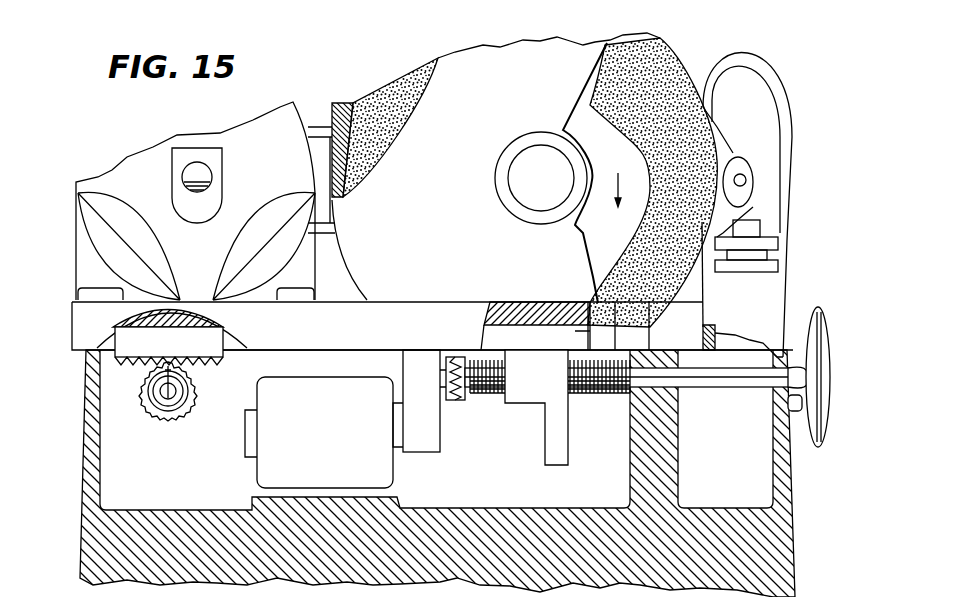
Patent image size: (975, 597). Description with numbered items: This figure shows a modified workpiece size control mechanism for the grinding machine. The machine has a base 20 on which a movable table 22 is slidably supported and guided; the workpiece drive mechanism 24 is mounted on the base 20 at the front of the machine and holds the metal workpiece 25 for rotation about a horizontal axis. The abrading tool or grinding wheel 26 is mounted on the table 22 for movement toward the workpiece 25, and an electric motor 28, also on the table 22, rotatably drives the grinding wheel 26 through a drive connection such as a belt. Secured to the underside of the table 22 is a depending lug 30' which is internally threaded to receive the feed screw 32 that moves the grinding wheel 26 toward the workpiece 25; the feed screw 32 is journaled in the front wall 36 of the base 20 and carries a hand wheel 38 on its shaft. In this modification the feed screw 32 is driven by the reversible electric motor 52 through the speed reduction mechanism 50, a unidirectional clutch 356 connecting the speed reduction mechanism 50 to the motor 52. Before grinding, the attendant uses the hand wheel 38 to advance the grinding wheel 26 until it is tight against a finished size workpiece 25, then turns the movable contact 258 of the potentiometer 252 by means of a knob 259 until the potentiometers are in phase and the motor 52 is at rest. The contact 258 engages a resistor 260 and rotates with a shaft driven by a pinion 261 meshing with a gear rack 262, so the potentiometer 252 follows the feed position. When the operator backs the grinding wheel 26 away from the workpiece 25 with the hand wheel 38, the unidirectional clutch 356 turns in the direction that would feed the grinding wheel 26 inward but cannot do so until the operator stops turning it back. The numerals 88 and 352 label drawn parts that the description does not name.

The base 20 is at (780, 566).
The movable table 22 is at (505, 312).
The workpiece drive mechanism 24 is at (790, 212).
The workpiece 25 is at (745, 196).
The grinding wheel 26 is at (672, 70).
The electric motor 28 is at (95, 236).
The depending lug 30' is at (565, 310).
The feed screw 32 is at (591, 394).
The front wall 36 is at (780, 428).
The hand wheel 38 is at (822, 356).
The speed reduction mechanism 50 is at (420, 443).
The reversible electric drive motor 52 is at (270, 473).
The grinding wheel 88 is at (466, 70).
The potentiometer 252 is at (152, 410).
The movable contact 258 is at (176, 379).
The knob 259 is at (171, 399).
The resistor 260 is at (176, 397).
The pinion 261 is at (140, 377).
The gear rack 262 is at (115, 362).
The slide 352 is at (548, 452).
The unidirectional clutch 356 is at (455, 402).